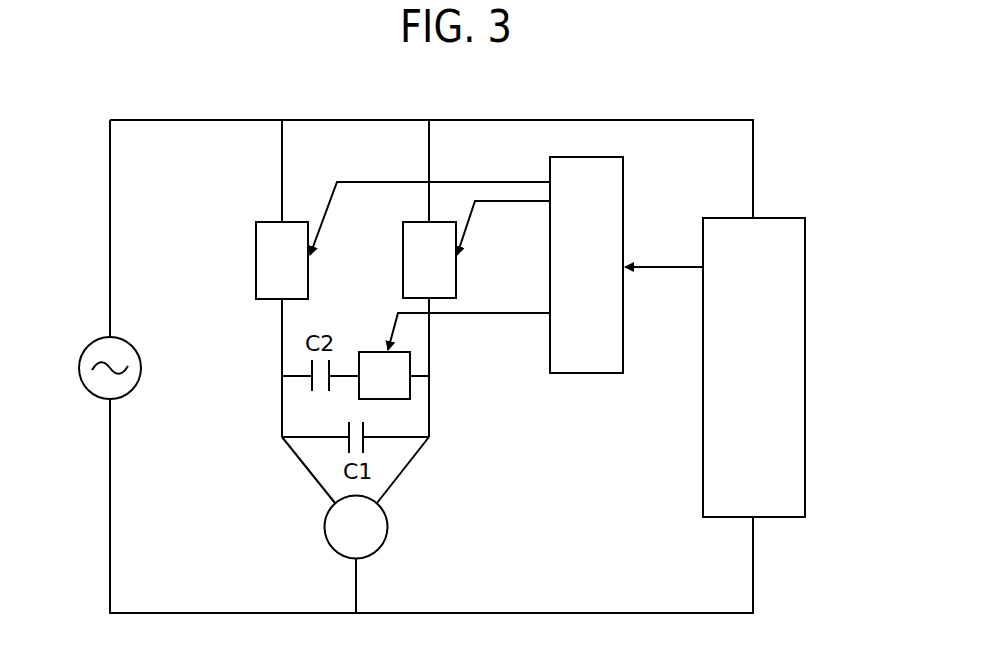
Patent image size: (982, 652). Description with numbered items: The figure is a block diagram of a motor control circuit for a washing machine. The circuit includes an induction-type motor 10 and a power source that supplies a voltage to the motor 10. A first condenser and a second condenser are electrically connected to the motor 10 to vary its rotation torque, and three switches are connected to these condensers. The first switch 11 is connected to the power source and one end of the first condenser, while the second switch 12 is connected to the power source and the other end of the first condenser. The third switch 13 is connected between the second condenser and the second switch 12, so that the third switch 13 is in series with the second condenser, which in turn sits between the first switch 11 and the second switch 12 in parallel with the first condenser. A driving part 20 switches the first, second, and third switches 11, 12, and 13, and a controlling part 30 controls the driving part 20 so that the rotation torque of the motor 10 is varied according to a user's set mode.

The motor 10 is at (390, 527).
The first switch 11 is at (258, 258).
The second switch 12 is at (456, 276).
The third switch 13 is at (404, 358).
The driving part 20 is at (585, 373).
The controlling part 30 is at (805, 367).